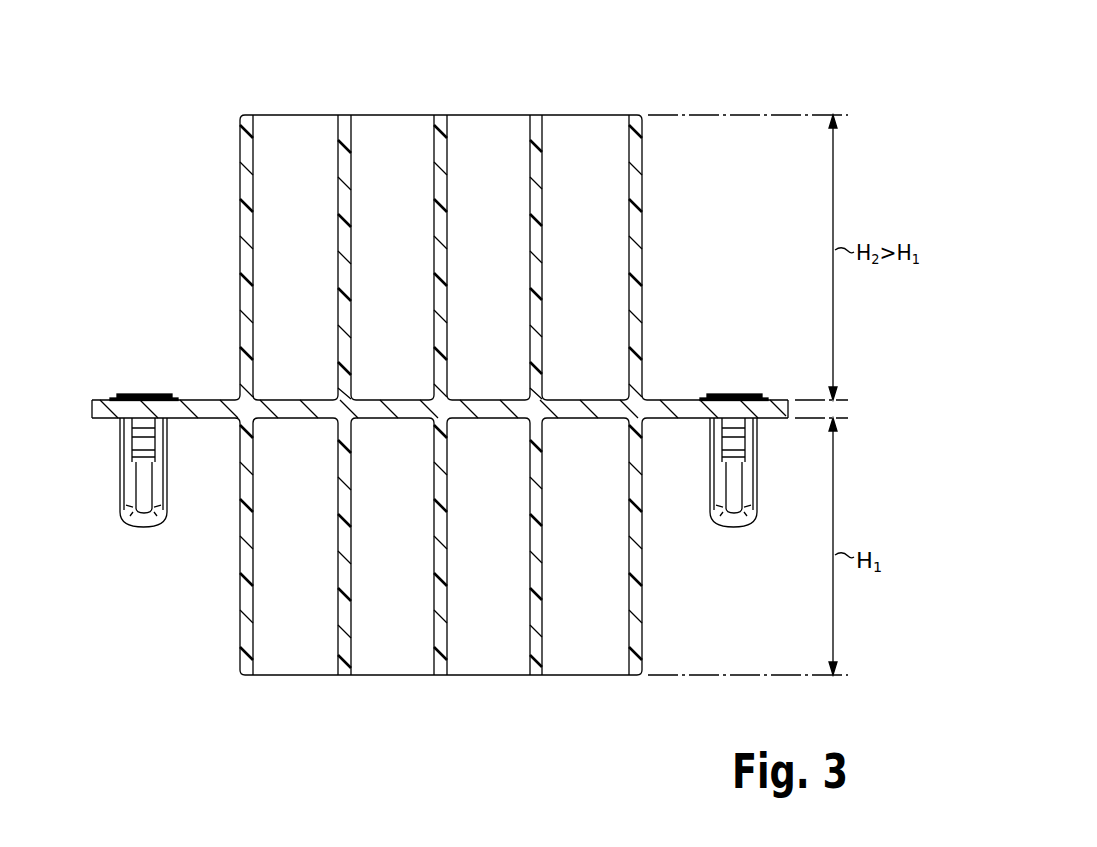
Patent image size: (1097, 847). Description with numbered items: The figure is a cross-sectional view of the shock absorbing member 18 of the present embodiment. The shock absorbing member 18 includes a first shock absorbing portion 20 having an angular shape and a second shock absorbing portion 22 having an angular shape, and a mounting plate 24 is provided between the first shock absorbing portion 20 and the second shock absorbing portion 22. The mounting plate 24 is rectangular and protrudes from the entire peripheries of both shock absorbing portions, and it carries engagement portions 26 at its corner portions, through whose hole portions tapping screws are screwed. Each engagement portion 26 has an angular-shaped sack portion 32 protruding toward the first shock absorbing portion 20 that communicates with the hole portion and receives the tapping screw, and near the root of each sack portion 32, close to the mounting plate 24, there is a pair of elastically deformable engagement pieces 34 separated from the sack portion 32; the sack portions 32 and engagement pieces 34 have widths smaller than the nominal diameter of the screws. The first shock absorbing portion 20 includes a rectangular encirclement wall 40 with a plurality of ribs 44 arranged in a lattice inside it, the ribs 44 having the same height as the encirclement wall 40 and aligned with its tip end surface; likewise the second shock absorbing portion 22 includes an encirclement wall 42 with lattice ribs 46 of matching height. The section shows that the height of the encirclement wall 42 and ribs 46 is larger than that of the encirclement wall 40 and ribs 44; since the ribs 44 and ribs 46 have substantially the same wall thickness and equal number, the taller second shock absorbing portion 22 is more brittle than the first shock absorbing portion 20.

The shock absorbing member 18 is at (440, 342).
The first shock absorbing portion 20 is at (477, 546).
The second shock absorbing portion 22 is at (480, 257).
The mounting plate 24 is at (657, 398).
The engagement portion 26 is at (462, 423).
The angular-shaped sack portion 32 is at (165, 480).
The engagement piece 34 is at (147, 437).
The encirclement wall 40 is at (641, 588).
The encirclement wall 42 is at (641, 197).
The rib 44 is at (447, 548).
The rib 46 is at (447, 207).